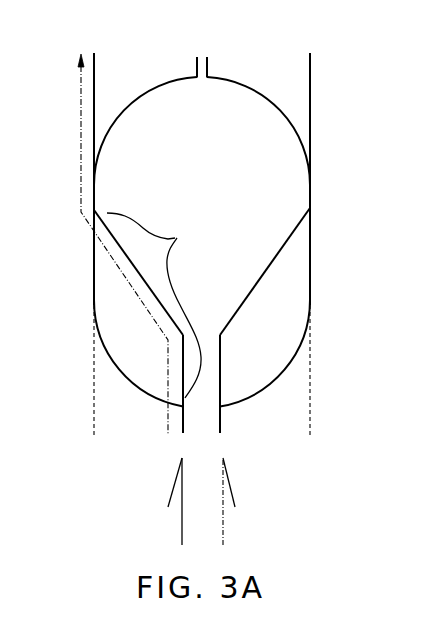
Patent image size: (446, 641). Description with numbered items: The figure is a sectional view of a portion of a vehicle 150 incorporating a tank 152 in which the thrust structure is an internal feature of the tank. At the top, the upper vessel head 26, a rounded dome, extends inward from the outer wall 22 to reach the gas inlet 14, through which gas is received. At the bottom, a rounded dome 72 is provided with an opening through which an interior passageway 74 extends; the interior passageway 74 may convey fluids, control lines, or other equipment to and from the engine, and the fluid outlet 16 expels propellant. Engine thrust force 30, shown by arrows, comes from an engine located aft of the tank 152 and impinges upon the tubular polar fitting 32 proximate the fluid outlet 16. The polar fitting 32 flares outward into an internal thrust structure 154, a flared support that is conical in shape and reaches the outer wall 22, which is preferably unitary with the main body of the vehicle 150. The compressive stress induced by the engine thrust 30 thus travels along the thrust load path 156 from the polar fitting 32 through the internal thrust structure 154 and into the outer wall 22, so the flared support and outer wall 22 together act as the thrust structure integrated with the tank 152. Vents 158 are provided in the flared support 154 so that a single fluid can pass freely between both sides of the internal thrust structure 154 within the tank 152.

The gas inlet 14 is at (204, 56).
The fluid outlet 16 is at (193, 437).
The outer wall 22 is at (311, 263).
The upper vessel head 26 is at (252, 87).
The engine thrust 30 is at (224, 522).
The polar fitting 32 is at (222, 430).
The rounded dome 72 is at (140, 389).
The interior passageway 74 is at (222, 411).
The vehicle 150 is at (345, 73).
The tank 152 is at (283, 183).
The internal thrust structure 154 is at (248, 293).
The thrust load path 156 is at (81, 160).
The vents 158 is at (181, 232).